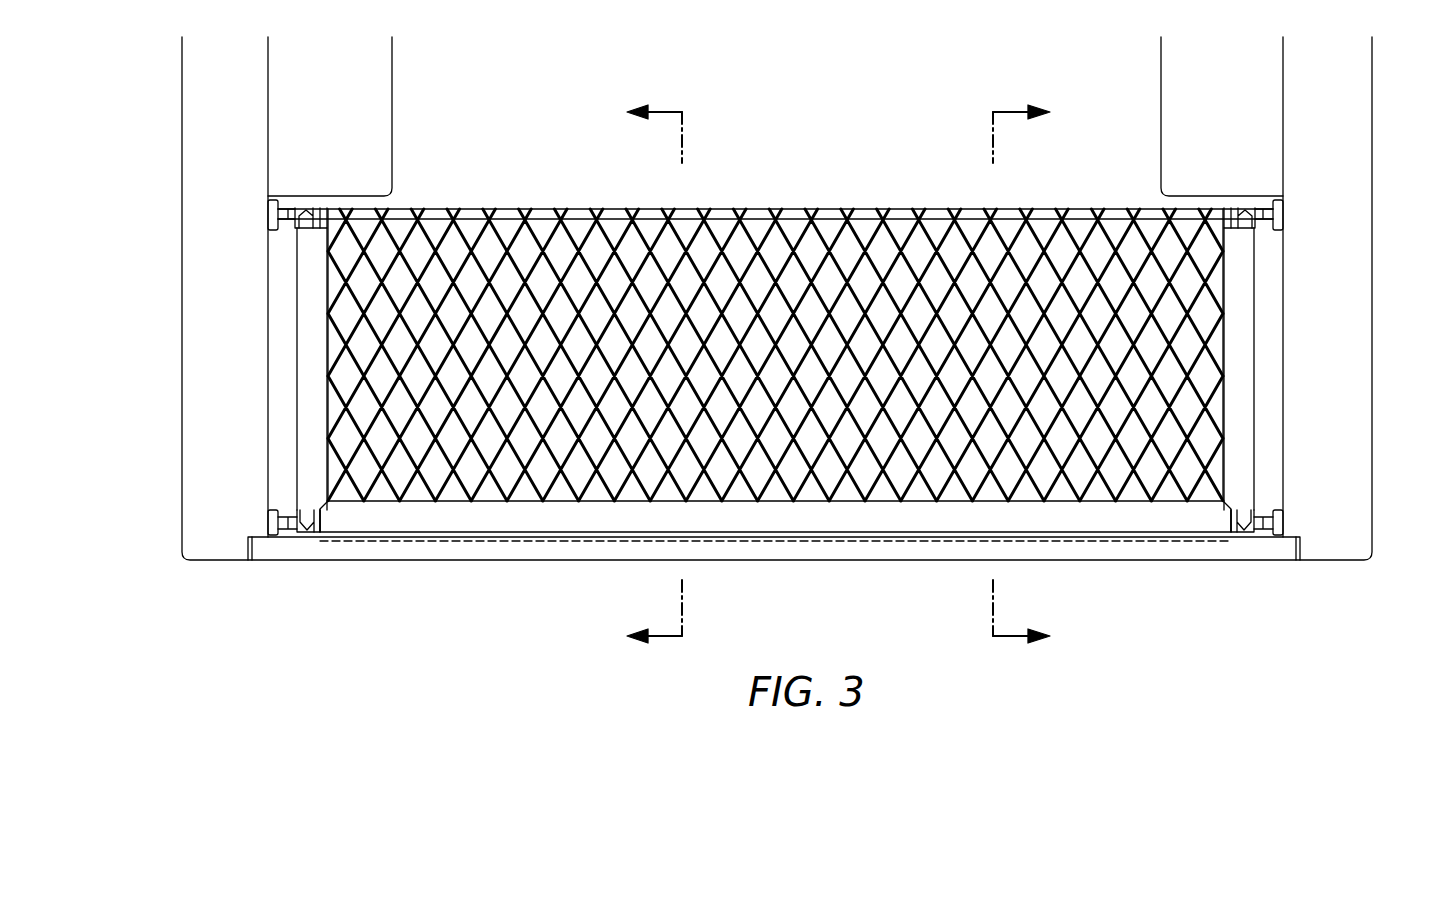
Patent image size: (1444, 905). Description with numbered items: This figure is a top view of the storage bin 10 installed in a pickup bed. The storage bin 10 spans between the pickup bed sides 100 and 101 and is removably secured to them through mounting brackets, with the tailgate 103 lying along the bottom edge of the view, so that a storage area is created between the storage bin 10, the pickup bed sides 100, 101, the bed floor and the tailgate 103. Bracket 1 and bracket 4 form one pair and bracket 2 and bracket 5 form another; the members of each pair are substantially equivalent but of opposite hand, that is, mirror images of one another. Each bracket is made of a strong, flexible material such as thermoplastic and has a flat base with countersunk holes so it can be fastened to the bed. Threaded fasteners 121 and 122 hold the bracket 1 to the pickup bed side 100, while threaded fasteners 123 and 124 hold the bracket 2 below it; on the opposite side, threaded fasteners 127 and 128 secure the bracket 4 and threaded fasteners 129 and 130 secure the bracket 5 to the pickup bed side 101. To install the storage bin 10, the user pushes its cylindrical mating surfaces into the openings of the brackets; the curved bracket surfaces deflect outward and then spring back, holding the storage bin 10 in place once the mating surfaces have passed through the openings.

The storage bin 10 is at (787, 188).
The mounting bracket 1 is at (1283, 205).
The mounting bracket 2 is at (1285, 505).
The mounting bracket 4 is at (222, 277).
The mounting bracket 5 is at (272, 518).
The pickup bed side 100 is at (1283, 385).
The pickup bed side 101 is at (270, 350).
The tailgate 103 is at (370, 563).
The threaded fastener 121 is at (1341, 188).
The threaded fastener 122 is at (1285, 230).
The threaded fastener 123 is at (1343, 483).
The threaded fastener 124 is at (1285, 522).
The threaded fastener 127 is at (270, 207).
The threaded fastener 128 is at (268, 225).
The threaded fastener 129 is at (270, 513).
The threaded fastener 130 is at (270, 523).